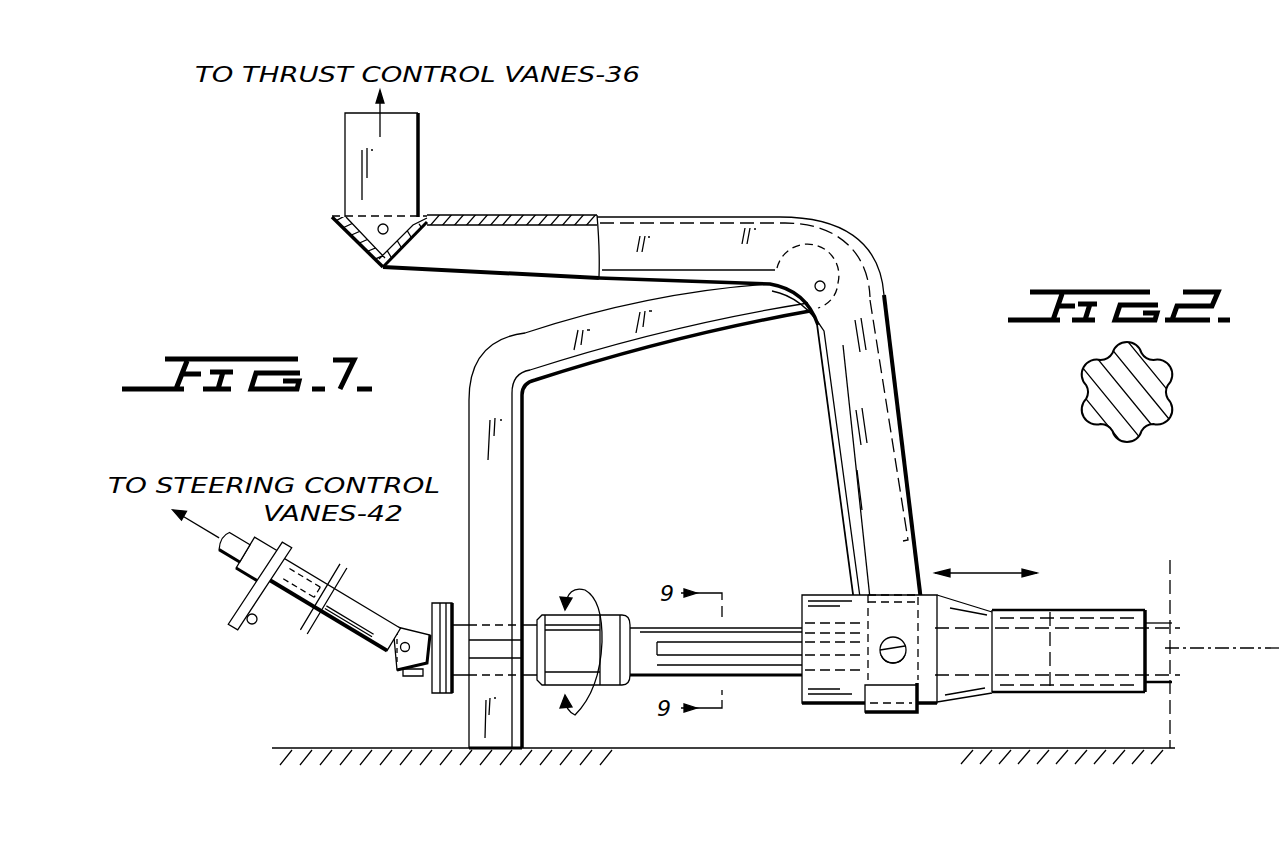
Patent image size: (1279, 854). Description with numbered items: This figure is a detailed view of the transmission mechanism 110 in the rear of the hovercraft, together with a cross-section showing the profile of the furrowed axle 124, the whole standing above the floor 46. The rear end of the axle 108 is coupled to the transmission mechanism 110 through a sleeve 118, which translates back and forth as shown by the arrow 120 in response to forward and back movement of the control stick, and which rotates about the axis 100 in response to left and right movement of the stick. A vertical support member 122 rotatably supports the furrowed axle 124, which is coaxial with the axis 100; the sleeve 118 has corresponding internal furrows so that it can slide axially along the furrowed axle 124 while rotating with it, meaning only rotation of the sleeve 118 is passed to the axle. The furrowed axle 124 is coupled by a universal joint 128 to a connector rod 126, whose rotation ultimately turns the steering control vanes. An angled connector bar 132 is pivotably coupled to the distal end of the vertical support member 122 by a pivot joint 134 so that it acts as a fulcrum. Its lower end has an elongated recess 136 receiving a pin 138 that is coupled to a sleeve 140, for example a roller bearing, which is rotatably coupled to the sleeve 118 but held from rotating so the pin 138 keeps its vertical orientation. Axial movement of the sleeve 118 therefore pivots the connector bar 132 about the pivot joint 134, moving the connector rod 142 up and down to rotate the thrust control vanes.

In FIG. 7, the floor 46 is at (282, 748).
In FIG. 7, the axis 100 is at (1228, 648).
In FIG. 7, the axle 108 is at (1160, 620).
In FIG. 7, the transmission mechanism 110 is at (843, 206).
In FIG. 7, the sleeve 118 is at (835, 704).
In FIG. 7, the arrow 120 is at (993, 573).
In FIG. 7, the vertical support member 122 is at (530, 508).
In FIG. 7, the furrowed axle 124 is at (763, 673).
In FIG. 9, the furrowed axle 124 is at (1170, 398).
In FIG. 7, the connector rod 126 is at (358, 639).
In FIG. 7, the universal joint 128 is at (419, 676).
In FIG. 7, the angled connector bar 132 is at (700, 200).
In FIG. 7, the pivot joint 134 is at (825, 283).
In FIG. 7, the elongated recess 136 is at (913, 658).
In FIG. 7, the pin 138 is at (887, 640).
In FIG. 7, the sleeve 140 is at (892, 713).
In FIG. 7, the connector rod 142 is at (408, 168).